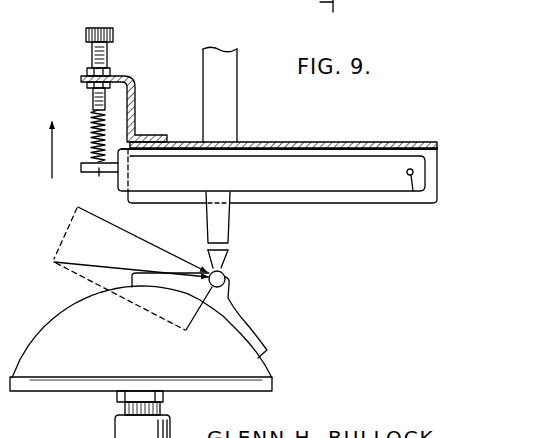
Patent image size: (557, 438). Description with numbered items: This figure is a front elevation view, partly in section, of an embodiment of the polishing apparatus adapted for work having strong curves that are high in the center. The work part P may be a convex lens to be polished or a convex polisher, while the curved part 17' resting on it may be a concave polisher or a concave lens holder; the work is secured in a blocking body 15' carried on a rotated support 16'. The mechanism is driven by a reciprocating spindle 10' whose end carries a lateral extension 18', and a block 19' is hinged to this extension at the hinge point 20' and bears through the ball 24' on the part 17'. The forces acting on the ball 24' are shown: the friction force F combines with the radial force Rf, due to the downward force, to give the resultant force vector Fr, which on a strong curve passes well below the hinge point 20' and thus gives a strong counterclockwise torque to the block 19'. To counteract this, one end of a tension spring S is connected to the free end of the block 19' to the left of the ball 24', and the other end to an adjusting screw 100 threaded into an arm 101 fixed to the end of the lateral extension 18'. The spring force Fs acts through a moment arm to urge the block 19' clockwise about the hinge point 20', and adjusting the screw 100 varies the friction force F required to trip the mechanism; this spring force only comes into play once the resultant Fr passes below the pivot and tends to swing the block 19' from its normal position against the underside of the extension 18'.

The adjusting screw 100 is at (107, 61).
The arm 101 is at (137, 97).
The tension spring S is at (97, 137).
The spring force vector Fs is at (34, 150).
The spindle 10' is at (237, 94).
The lateral extension 18' is at (283, 129).
The block 19' is at (277, 196).
The hinge point 20' is at (423, 202).
The ball 24' is at (238, 239).
The concave polisher or concave lens holder 17' is at (219, 315).
The convex lens or convex polisher P is at (253, 365).
The blocking body 15' is at (161, 344).
The support 16' is at (121, 414).
The friction force F is at (131, 234).
The resultant force vector Fr is at (120, 243).
The radial force Rf is at (134, 311).